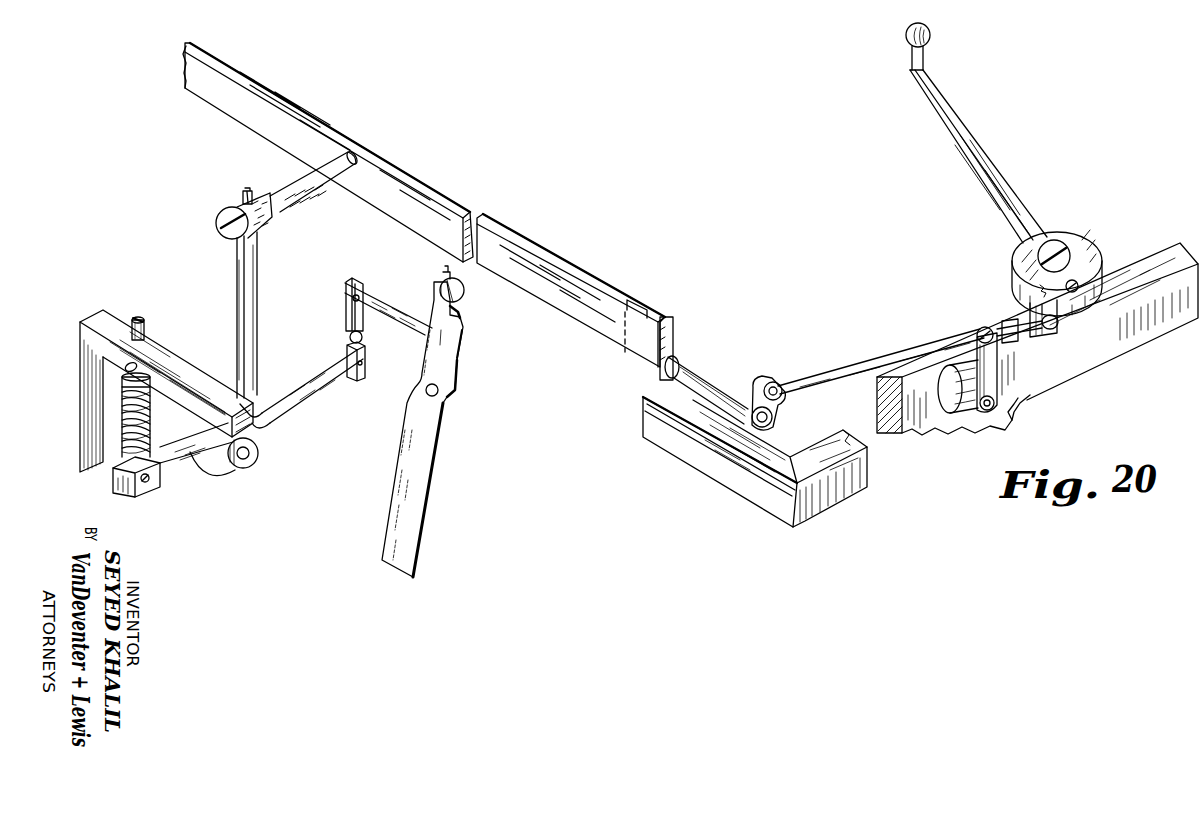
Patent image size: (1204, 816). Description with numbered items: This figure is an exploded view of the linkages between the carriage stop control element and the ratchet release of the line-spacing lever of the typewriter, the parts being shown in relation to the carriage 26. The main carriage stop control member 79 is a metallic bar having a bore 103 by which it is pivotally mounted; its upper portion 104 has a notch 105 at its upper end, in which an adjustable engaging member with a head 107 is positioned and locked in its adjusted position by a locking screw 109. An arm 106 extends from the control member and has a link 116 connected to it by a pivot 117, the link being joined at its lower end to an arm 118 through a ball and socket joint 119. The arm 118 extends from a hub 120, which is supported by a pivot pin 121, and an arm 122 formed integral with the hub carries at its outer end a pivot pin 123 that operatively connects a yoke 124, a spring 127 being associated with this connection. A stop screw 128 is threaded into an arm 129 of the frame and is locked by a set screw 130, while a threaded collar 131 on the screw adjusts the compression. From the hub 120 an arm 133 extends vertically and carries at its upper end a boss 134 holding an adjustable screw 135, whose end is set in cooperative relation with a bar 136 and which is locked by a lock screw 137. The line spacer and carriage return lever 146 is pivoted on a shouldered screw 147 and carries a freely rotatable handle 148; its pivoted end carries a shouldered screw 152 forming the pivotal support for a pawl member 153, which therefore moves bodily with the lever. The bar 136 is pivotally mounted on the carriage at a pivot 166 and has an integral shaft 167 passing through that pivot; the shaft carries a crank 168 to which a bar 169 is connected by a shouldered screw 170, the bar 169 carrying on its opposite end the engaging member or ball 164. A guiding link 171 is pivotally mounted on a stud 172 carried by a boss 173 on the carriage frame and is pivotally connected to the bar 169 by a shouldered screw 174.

The carriage 26 is at (760, 500).
The main carriage stop control member 79 is at (466, 378).
The bore 103 is at (435, 397).
The upper portion of the bar 104 is at (452, 337).
The notch 105 is at (461, 316).
The arm 106 is at (385, 312).
The ball head 107 is at (465, 292).
The locking screw 109 is at (451, 266).
The link 116 is at (350, 330).
The pivot 117 is at (350, 296).
The arm 118 is at (320, 395).
The ball and socket joint 119 is at (363, 340).
The hub 120 is at (263, 410).
The pivot pin 121 is at (262, 449).
The arm 122 is at (180, 452).
The pivot pin 123 is at (146, 483).
The yoke 124 is at (125, 498).
The spring 127 is at (151, 421).
The stop screw 128 is at (135, 312).
The arm of the frame 129 is at (175, 362).
The set screw 130 is at (134, 363).
The threaded collar 131 is at (122, 382).
The arm 133 is at (258, 318).
The boss 134 is at (235, 212).
The adjustable screw 135 is at (304, 178).
The bar 136 is at (402, 180).
The lock screw 137 is at (249, 188).
The line spacer and carriage return lever 146 is at (990, 160).
The shouldered screw 147 is at (1055, 250).
The handle 148 is at (930, 44).
The shouldered screw 152 is at (1068, 322).
The pawl member 153 is at (1100, 275).
The engaging member or ball 164 is at (1078, 365).
The pivot 166 is at (675, 350).
The shaft 167 is at (718, 382).
The crank 168 is at (780, 400).
The bar 169 is at (852, 362).
The shouldered screw 170 is at (773, 382).
The guiding link 171 is at (1000, 388).
The stud 172 is at (990, 415).
The boss 173 is at (935, 420).
The shouldered screw 174 is at (992, 326).